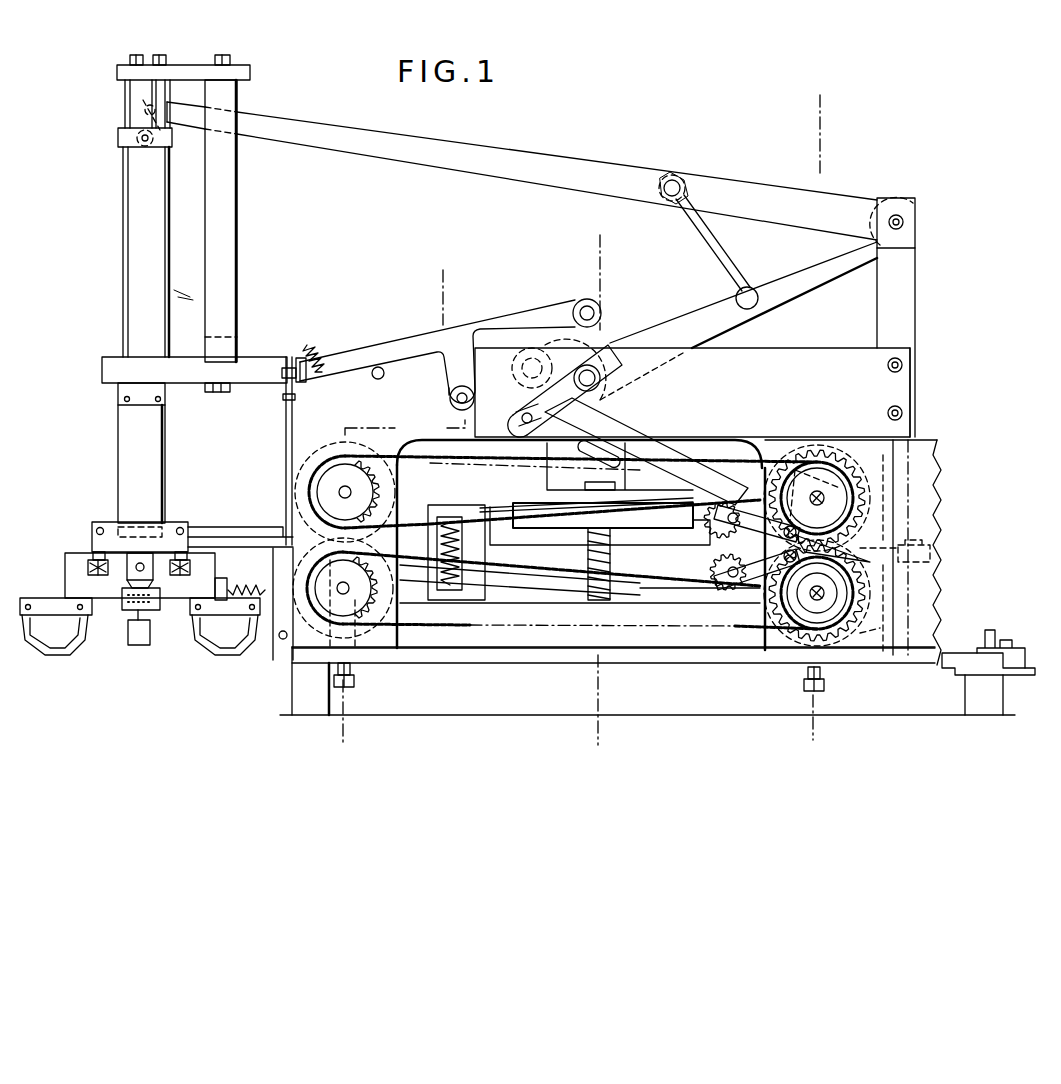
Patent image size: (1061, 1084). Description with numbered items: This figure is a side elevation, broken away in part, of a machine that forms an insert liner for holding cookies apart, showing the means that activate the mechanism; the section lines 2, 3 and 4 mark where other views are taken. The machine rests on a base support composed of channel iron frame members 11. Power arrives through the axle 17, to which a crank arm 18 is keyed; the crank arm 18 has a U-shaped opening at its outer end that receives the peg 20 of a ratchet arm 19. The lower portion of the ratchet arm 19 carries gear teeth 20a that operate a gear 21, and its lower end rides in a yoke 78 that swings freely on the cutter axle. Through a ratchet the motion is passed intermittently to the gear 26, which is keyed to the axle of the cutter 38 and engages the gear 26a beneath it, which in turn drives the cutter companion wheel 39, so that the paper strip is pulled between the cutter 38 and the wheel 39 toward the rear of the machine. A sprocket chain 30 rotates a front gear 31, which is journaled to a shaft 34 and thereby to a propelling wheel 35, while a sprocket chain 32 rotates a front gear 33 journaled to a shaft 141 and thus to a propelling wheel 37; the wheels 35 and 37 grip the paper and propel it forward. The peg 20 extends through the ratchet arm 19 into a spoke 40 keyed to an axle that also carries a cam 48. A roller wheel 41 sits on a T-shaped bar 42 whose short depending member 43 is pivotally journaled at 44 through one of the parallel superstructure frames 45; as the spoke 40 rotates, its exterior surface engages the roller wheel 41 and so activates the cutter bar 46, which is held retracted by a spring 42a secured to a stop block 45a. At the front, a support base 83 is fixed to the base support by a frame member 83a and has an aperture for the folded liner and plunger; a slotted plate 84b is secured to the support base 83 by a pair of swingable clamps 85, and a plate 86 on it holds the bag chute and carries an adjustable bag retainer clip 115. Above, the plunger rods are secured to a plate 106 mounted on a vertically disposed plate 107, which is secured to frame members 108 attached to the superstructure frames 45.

The section line 2- 2 is at (832, 104).
The section line 3- 3 is at (432, 280).
The section line 4- 4 is at (611, 254).
The channel iron frame members 11 is at (292, 680).
The axle 17 is at (604, 345).
The crank arm 18 is at (540, 405).
The ratchet arm 19 is at (613, 433).
The peg 20 is at (517, 424).
The gear teeth 20a is at (723, 478).
The gear 21 is at (830, 448).
The gear 26 is at (800, 455).
The gear 26a is at (853, 634).
The sprocket chain 30 is at (432, 462).
The front gear 31 is at (345, 492).
The sprocket chain 32 is at (410, 625).
The front gear 33 is at (366, 588).
The shaft 34 is at (352, 491).
The propelling wheel 35 is at (325, 452).
The propelling wheel 37 is at (292, 644).
The cutter 38 is at (883, 454).
The cutter companion wheel 39 is at (870, 589).
The spoke 40 is at (613, 417).
The roller wheel 41 is at (600, 305).
The T-shaped bar 42 is at (440, 341).
The spring 42a is at (322, 358).
The short depending member 43 is at (440, 388).
The pivot 44 is at (451, 404).
The superstructure frames 45 is at (805, 357).
The stop block 45a is at (308, 346).
The cutter bar 46 is at (287, 356).
The cam 48 is at (633, 387).
The yoke 78 is at (837, 538).
The support base 83 is at (112, 522).
The frame member 83a is at (217, 528).
The plate 84b is at (93, 552).
The swingable clamps 85 is at (88, 568).
The plate 86 is at (66, 563).
The plate 106 is at (193, 66).
The plate 107 is at (237, 210).
The frame members 108 is at (185, 360).
The bag retainer clip 115 is at (137, 556).
The shaft 141 is at (347, 594).